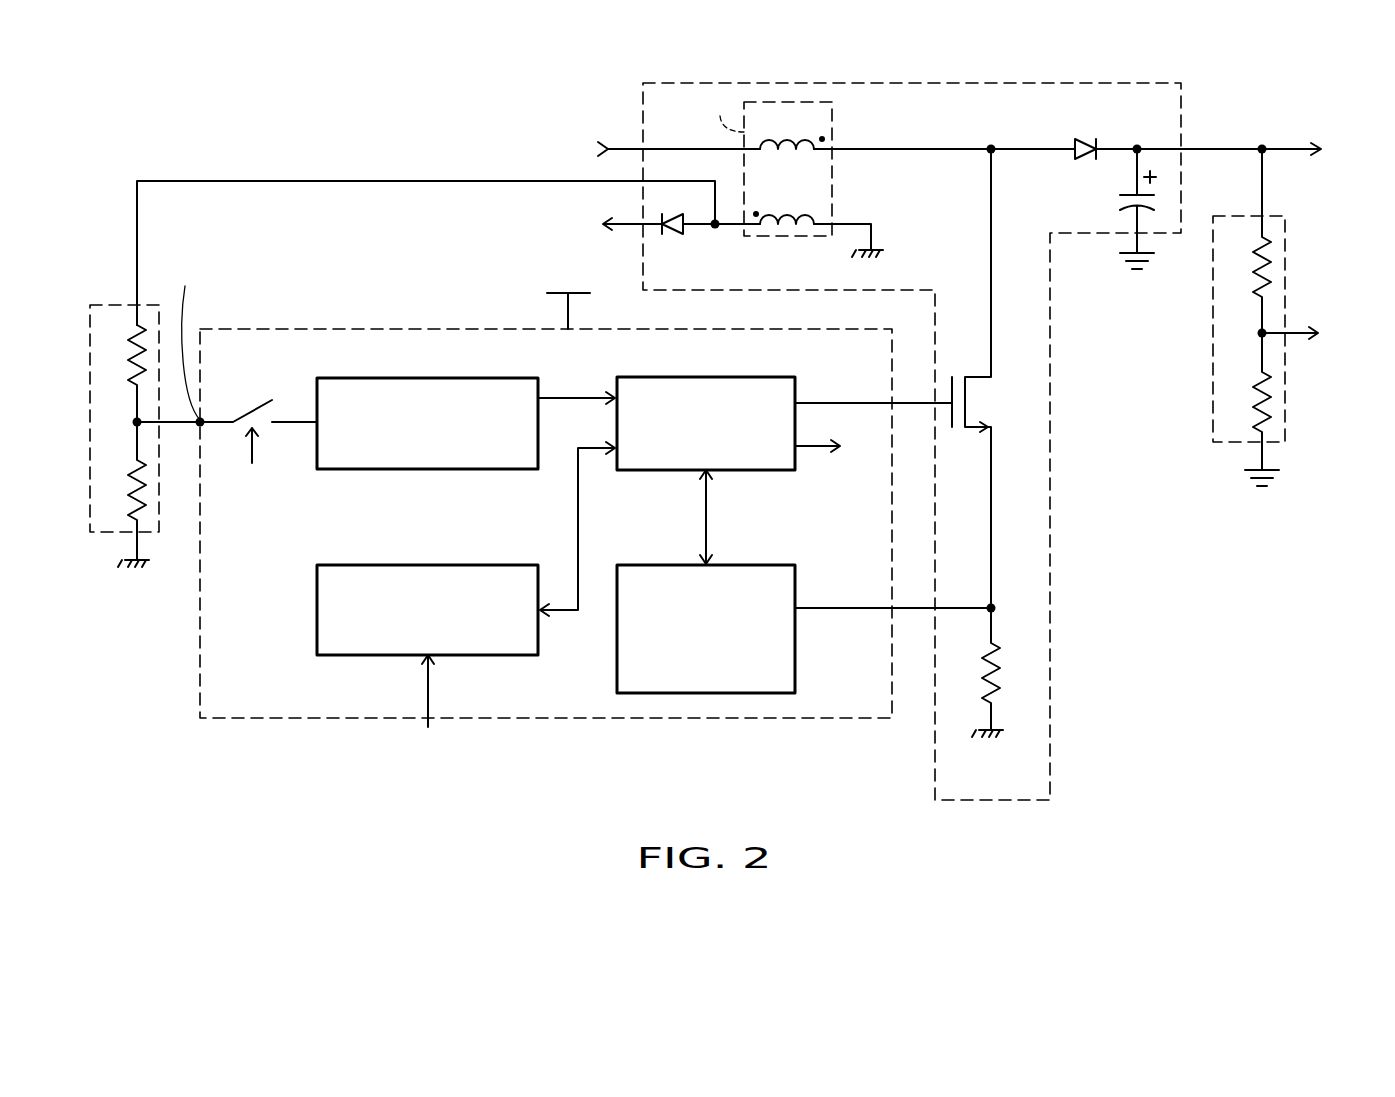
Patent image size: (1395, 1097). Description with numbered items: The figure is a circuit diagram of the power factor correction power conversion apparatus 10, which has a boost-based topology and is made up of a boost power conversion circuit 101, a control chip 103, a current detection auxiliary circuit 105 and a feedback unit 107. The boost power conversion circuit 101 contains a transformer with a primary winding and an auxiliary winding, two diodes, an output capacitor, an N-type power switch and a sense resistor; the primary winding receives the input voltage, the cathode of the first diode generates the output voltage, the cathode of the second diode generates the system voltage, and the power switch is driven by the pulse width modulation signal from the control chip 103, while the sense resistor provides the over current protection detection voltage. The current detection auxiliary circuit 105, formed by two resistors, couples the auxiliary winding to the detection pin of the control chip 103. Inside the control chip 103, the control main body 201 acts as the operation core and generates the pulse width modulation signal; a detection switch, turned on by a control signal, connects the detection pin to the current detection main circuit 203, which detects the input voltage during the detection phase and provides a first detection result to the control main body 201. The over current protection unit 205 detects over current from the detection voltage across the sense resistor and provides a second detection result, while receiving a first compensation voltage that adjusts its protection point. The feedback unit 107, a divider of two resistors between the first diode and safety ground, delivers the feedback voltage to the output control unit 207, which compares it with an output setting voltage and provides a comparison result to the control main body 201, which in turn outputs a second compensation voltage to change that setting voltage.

The power factor correction power conversion apparatus 10 is at (1374, 808).
The boost power conversion circuit 101 is at (1050, 525).
The control chip 103 is at (360, 327).
The current detection auxiliary circuit 105 is at (90, 322).
The feedback unit 107 is at (1285, 232).
The control main body 201 is at (750, 376).
The current detection main circuit 203 is at (350, 376).
The over current protection unit 205 is at (750, 563).
The output control unit 207 is at (350, 563).